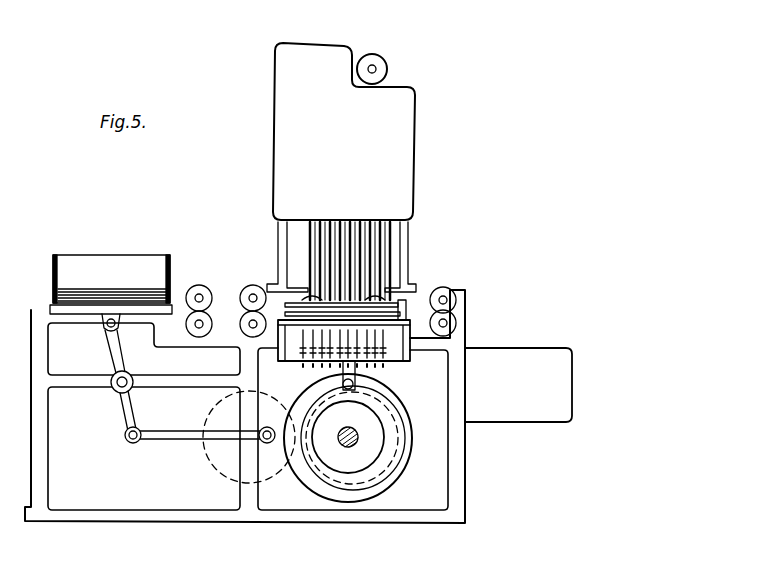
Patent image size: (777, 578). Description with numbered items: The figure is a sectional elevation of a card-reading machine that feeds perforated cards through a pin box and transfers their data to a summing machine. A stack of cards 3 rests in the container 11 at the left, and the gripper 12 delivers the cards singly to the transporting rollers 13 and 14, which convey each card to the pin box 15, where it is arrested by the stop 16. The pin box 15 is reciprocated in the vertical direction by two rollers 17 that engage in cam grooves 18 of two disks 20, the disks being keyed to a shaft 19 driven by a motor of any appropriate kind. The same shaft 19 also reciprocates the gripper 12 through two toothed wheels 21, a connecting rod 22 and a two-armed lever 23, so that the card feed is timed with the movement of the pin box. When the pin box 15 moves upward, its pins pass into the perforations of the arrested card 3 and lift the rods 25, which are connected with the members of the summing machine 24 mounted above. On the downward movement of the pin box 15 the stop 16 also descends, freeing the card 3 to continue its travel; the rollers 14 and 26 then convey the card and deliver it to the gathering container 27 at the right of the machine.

The card 3 is at (82, 291).
The container 11 is at (53, 290).
The gripper 12 is at (88, 312).
The transporting rollers 13 is at (251, 289).
The transporting rollers 14 is at (310, 300).
The pin box 15 is at (405, 351).
The stop 16 is at (400, 307).
The rollers 17 is at (355, 384).
The cam grooves 18 is at (397, 413).
The shaft 19 is at (350, 426).
The disks 20 is at (395, 472).
The toothed wheels 21 is at (318, 478).
The connecting rod 22 is at (177, 433).
The two-armed lever 23 is at (128, 403).
The summing machine 24 is at (344, 131).
The rods 25 is at (360, 258).
The rollers 26 is at (455, 322).
The gathering container 27 is at (518, 385).